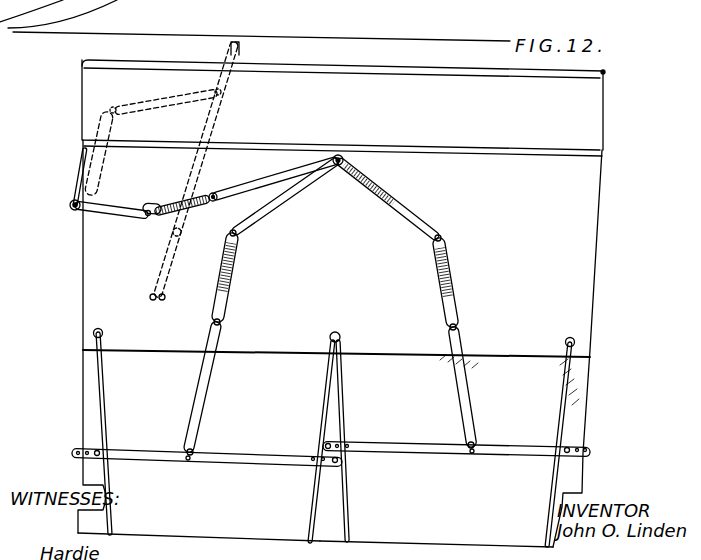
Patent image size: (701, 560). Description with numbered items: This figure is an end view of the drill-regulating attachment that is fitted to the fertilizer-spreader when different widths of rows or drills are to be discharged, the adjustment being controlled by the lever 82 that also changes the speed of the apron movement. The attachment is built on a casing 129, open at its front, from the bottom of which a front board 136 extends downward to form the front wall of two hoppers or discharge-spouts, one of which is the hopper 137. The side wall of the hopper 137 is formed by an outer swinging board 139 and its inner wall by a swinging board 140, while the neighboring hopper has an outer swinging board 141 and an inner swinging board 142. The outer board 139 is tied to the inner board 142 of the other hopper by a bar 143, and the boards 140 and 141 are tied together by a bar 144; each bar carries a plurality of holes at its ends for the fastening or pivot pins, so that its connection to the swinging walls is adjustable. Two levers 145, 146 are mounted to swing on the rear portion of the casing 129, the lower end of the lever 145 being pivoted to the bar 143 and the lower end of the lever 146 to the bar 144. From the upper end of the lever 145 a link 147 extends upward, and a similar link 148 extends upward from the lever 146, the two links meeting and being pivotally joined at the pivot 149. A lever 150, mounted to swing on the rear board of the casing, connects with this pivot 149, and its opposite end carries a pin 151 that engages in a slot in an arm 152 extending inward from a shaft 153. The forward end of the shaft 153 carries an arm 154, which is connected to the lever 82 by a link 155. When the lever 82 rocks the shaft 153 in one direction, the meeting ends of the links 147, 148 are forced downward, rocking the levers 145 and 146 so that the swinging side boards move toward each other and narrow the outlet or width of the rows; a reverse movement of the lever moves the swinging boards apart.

The lever 82 is at (236, 46).
The casing 129 is at (343, 108).
The front board 136 is at (436, 524).
The hopper 137 is at (199, 523).
The outer swinging board 139 is at (110, 498).
The swinging board 140 is at (316, 507).
The swinging board 141 is at (552, 488).
The swinging board 142 is at (349, 498).
The bar 143 is at (219, 448).
The bar 144 is at (414, 443).
The lever 145 is at (230, 294).
The lever 146 is at (447, 305).
The link 147 is at (272, 213).
The link 148 is at (418, 230).
The pivot 149 is at (345, 162).
The lever 150 is at (247, 181).
The pin 151 is at (147, 221).
The arm 152 is at (129, 208).
The shaft 153 is at (70, 209).
The arm 154 is at (78, 182).
The link 155 is at (146, 100).